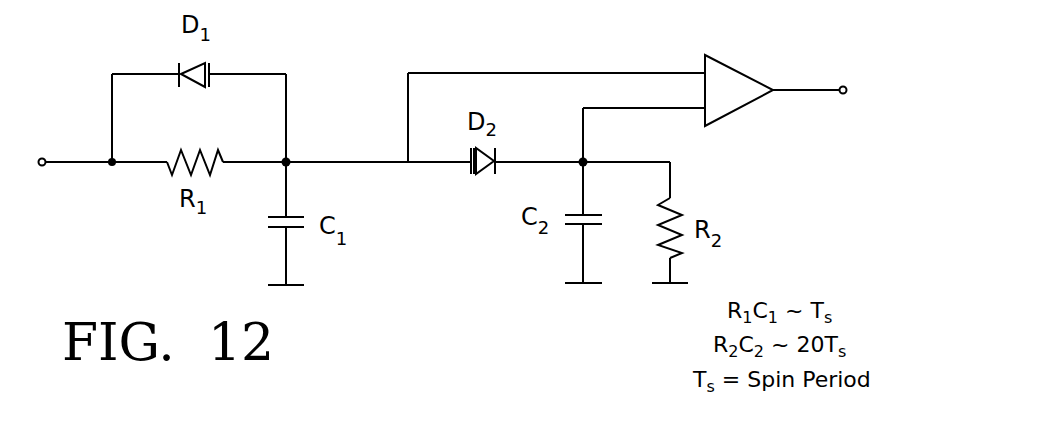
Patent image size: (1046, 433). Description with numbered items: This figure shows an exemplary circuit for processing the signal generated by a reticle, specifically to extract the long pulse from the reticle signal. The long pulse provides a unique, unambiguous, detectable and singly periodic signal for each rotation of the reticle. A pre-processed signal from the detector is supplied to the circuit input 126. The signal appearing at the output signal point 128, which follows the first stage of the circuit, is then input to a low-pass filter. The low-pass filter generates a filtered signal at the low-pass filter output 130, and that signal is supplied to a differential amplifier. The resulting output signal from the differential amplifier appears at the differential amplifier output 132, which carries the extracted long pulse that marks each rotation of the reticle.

The circuit input 126 is at (42, 158).
The output signal point 128 is at (288, 161).
The low-pass filter output 130 is at (583, 161).
The differential amplifier output 132 is at (847, 87).